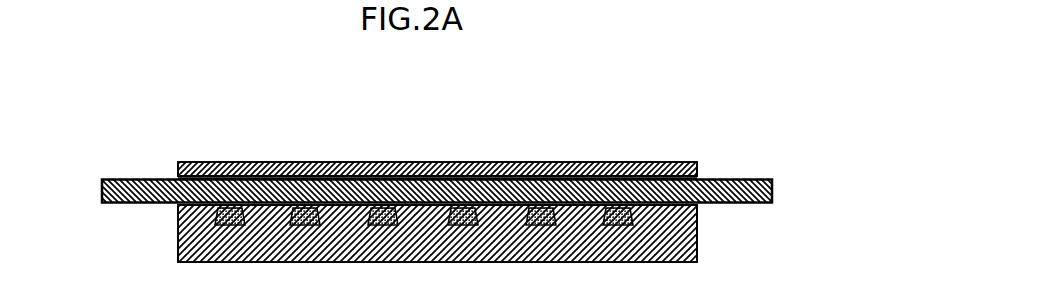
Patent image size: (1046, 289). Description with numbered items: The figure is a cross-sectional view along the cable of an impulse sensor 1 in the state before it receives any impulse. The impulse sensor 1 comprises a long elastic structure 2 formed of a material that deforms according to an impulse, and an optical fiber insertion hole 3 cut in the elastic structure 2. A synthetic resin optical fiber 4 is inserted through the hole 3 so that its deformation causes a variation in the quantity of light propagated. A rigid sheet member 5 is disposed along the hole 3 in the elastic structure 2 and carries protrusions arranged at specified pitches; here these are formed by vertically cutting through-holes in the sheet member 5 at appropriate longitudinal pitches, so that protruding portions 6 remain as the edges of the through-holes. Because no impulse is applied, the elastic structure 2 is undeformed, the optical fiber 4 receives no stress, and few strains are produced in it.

The impulse sensor 1 is at (675, 132).
The elastic structure 2 is at (567, 161).
The optical fiber insertion hole 3 is at (516, 161).
The synthetic resin optical fiber 4 is at (496, 180).
The sheet member 5 is at (458, 207).
The protruding portion 6 is at (372, 209).